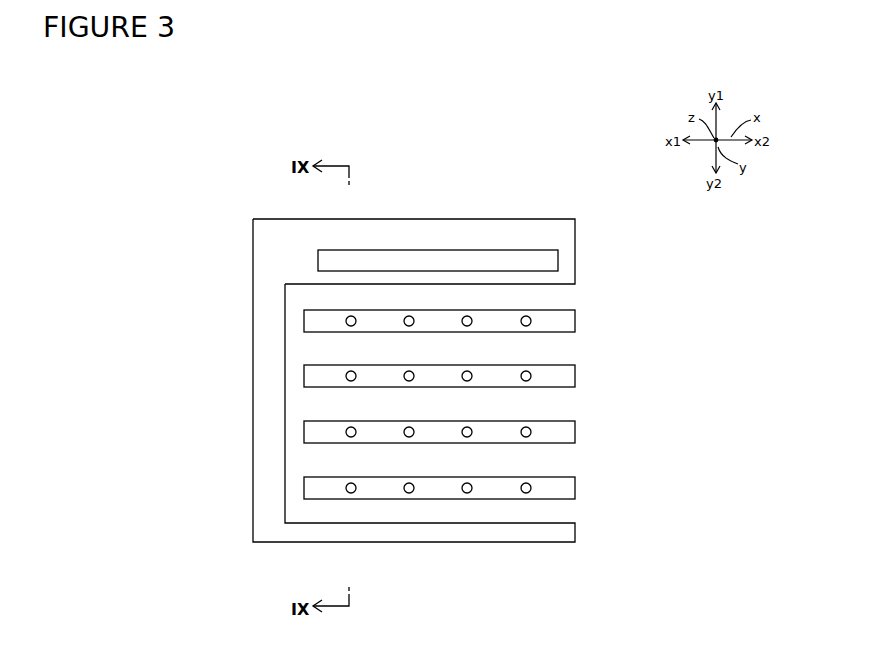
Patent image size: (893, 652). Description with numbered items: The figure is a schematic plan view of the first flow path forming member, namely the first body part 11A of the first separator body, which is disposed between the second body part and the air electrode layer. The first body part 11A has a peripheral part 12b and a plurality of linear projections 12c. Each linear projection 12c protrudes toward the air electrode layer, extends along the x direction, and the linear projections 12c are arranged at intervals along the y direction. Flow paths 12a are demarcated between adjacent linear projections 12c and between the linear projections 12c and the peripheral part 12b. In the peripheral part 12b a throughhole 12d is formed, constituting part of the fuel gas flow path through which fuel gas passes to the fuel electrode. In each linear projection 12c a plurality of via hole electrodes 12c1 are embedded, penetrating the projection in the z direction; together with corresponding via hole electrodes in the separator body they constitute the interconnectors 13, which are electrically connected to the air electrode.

The first body part 11A is at (582, 200).
The flow paths 12a is at (551, 284).
The peripheral part 12b is at (578, 255).
The linear projections 12c is at (578, 378).
The via hole electrodes 12c1 is at (531, 431).
The throughhole 12d is at (462, 251).
The interconnectors 13 is at (533, 487).